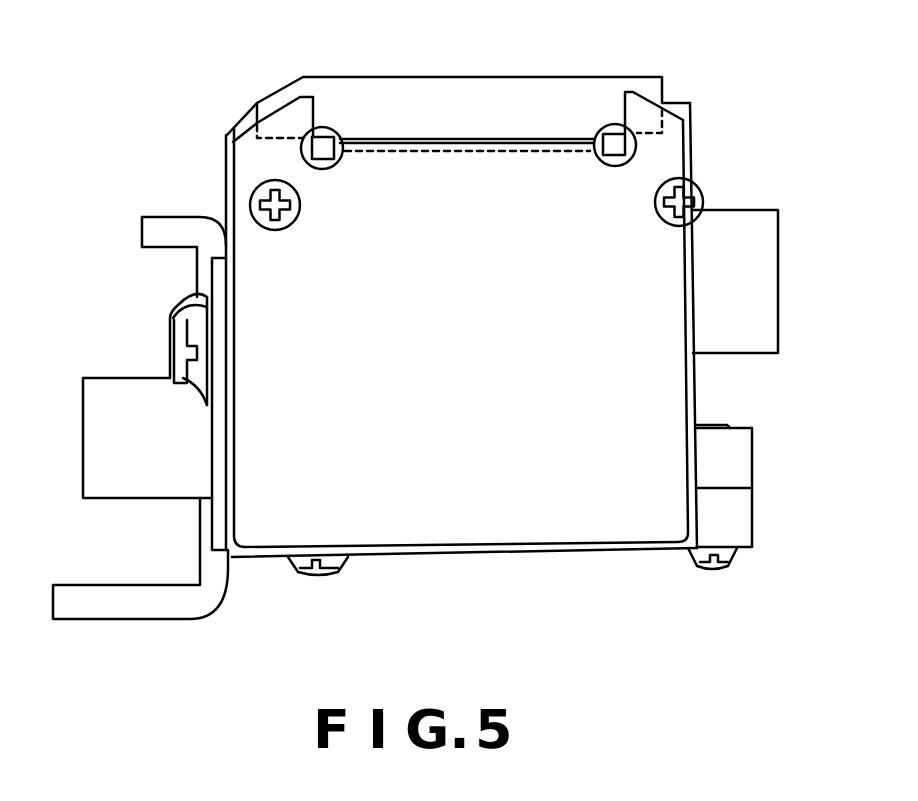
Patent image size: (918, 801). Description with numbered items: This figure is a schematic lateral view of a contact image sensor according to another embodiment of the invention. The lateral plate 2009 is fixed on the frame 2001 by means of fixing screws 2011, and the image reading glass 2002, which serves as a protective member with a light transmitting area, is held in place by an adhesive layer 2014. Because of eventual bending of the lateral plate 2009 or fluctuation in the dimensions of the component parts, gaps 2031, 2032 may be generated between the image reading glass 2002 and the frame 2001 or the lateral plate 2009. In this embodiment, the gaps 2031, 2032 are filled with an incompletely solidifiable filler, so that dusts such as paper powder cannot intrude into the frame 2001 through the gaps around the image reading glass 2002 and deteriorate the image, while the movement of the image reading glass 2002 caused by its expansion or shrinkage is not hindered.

The frame 2001 is at (727, 222).
The image reading glass 2002 is at (415, 110).
The lateral plate 2009 is at (667, 150).
The fixing screw 2011 is at (252, 197).
The adhesive layer 2014 is at (513, 132).
The gap 2031 is at (610, 124).
The gap 2032 is at (322, 127).